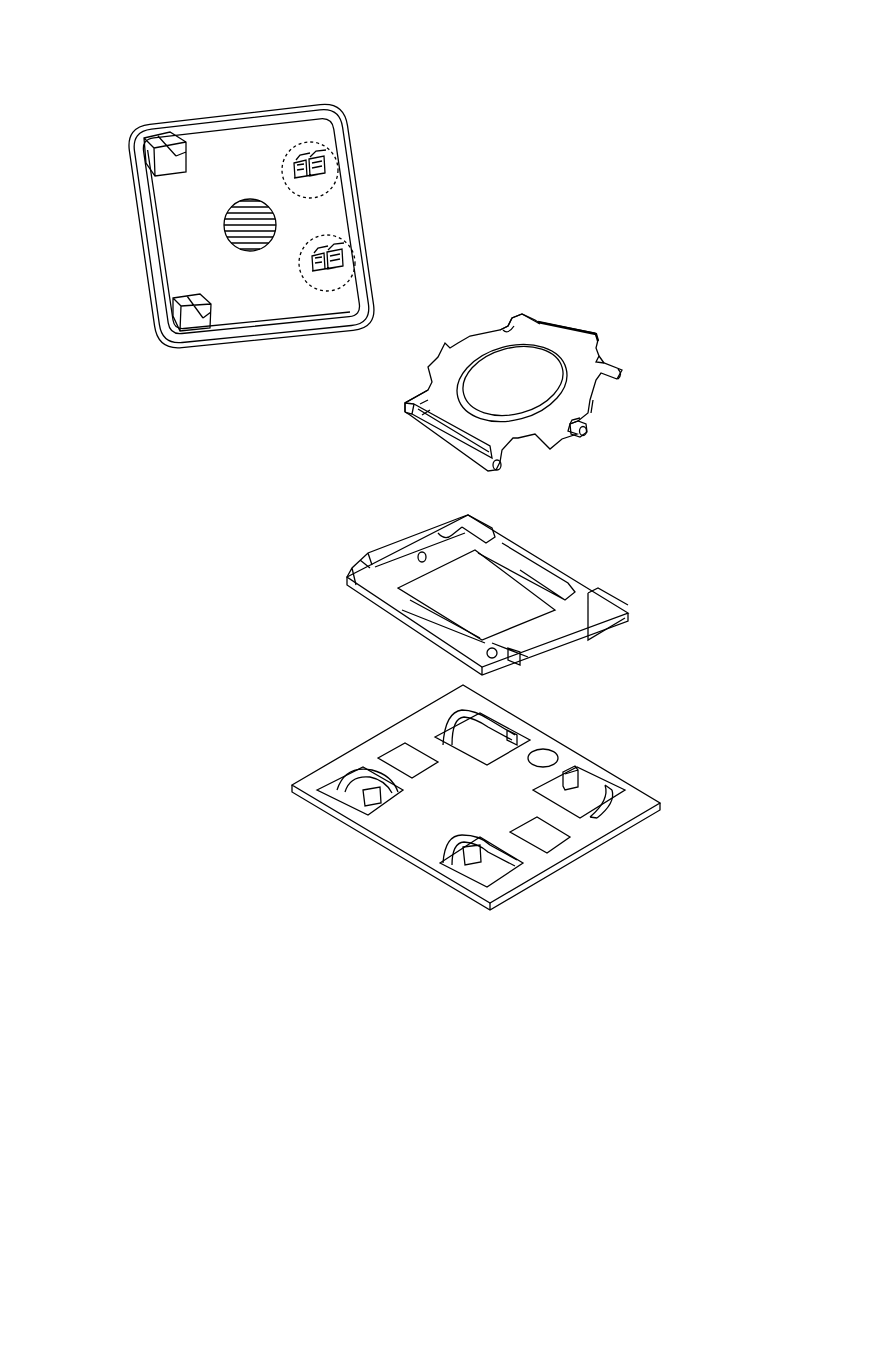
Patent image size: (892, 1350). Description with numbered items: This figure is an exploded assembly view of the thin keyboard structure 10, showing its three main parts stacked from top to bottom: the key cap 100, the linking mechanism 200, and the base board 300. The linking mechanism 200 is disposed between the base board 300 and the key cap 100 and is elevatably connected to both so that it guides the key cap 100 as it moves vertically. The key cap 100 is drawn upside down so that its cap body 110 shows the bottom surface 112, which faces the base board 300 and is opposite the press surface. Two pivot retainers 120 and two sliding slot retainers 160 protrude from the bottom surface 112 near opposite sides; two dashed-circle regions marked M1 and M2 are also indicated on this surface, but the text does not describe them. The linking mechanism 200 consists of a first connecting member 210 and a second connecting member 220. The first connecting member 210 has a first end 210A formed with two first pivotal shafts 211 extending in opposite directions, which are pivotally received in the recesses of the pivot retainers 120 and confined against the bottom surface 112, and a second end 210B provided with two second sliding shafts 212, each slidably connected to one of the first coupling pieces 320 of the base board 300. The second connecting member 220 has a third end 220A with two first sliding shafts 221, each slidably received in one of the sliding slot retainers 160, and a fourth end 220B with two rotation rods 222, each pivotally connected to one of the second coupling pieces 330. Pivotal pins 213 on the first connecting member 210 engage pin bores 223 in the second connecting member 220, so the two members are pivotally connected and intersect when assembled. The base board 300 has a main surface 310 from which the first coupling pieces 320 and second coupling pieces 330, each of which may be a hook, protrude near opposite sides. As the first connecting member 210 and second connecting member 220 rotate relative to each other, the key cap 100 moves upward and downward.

The thin keyboard structure 10 is at (766, 288).
The key cap 100 is at (303, 32).
The cap body 110 is at (237, 118).
The bottom surface 112 is at (153, 240).
The pivot retainer 120 is at (305, 160).
The sliding slot retainer 160 is at (180, 140).
The first magnet M1 is at (343, 233).
The second magnet M2 is at (330, 140).
The linking mechanism 200 is at (718, 375).
The first connecting member 210 is at (582, 391).
The first end 210A is at (540, 330).
The second end 210B is at (445, 433).
The first pivotal shaft 211 is at (496, 318).
The second sliding shaft 212 is at (412, 408).
The pivotal pin 213 is at (578, 436).
The second connecting member 220 is at (578, 634).
The third end 220A is at (403, 608).
The fourth end 220B is at (540, 570).
The first sliding shaft 221 is at (357, 572).
The rotation rod 222 is at (475, 524).
The pin bore 223 is at (418, 553).
The base board 300 is at (660, 800).
The main surface 310 is at (583, 838).
The first coupling piece 320 is at (447, 860).
The second coupling piece 330 is at (598, 786).